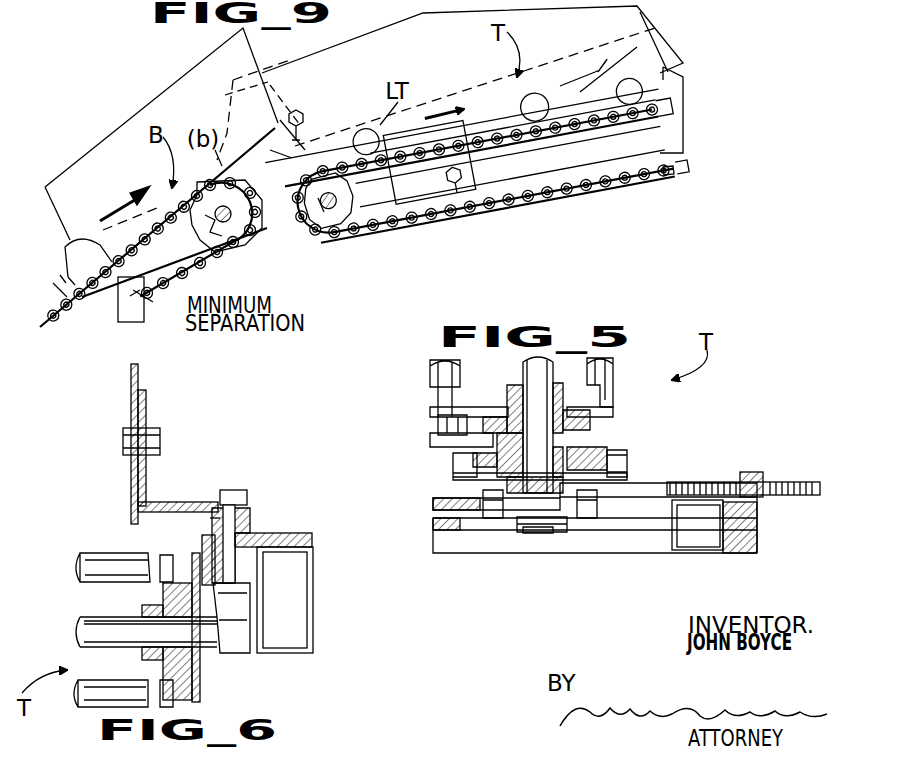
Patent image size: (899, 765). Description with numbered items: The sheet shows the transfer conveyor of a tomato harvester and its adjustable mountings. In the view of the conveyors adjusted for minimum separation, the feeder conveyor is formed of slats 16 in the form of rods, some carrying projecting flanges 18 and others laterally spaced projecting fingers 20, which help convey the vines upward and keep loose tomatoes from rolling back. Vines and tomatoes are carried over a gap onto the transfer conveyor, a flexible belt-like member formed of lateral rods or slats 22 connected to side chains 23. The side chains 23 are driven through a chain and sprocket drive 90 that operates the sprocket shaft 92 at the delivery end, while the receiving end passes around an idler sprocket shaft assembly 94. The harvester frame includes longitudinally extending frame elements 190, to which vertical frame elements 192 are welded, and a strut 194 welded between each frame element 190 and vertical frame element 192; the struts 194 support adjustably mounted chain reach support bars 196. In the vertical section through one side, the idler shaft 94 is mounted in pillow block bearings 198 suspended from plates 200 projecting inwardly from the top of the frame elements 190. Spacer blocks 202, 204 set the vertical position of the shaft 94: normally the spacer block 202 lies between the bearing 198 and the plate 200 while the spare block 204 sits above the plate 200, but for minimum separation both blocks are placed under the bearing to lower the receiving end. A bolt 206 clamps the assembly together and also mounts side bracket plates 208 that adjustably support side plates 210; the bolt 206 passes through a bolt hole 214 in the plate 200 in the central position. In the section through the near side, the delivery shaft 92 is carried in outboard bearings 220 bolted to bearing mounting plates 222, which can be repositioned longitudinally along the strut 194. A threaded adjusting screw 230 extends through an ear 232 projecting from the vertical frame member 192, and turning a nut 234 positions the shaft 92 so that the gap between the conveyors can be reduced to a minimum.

In FIG. 9, the slats 16 is at (173, 225).
In FIG. 9, the projecting flanges 18 is at (157, 193).
In FIG. 9, the projecting fingers 20 is at (77, 240).
In FIG. 9, the lateral rods or slats 22 is at (480, 214).
In FIG. 6, the lateral rods or slats 22 is at (87, 580).
In FIG. 5, the lateral rods or slats 22 is at (430, 370).
In FIG. 9, the side chains 23 is at (675, 172).
In FIG. 6, the side chains 23 is at (200, 695).
In FIG. 5, the side chains 23 is at (607, 420).
In FIG. 5, the chain and sprocket drive 90 is at (627, 457).
In FIG. 5, the sprocket shaft 92 is at (538, 537).
In FIG. 9, the idler sprocket shaft assembly 94 is at (322, 218).
In FIG. 6, the idler sprocket shaft assembly 94 is at (80, 623).
In FIG. 9, the frame elements 190 is at (673, 53).
In FIG. 6, the frame elements 190 is at (313, 587).
In FIG. 5, the vertical frame elements 192 is at (712, 553).
In FIG. 9, the strut 194 is at (675, 103).
In FIG. 5, the strut 194 is at (457, 533).
In FIG. 9, the chain reach support bars 196 is at (668, 135).
In FIG. 9, the pillow block bearings 198 is at (330, 238).
In FIG. 6, the pillow block bearings 198 is at (233, 660).
In FIG. 9, the plates 200 is at (298, 124).
In FIG. 6, the plates 200 is at (273, 533).
In FIG. 9, the spacer block 202 is at (345, 188).
In FIG. 6, the spacer block 202 is at (212, 557).
In FIG. 9, the spacer block 204 is at (305, 106).
In FIG. 6, the spacer block 204 is at (250, 517).
In FIG. 6, the bolt 206 is at (233, 490).
In FIG. 9, the side bracket plates 208 is at (300, 82).
In FIG. 6, the side bracket plates 208 is at (173, 502).
In FIG. 9, the side plates 210 is at (416, 44).
In FIG. 6, the side plates 210 is at (138, 373).
In FIG. 6, the bolt hole 214 is at (210, 522).
In FIG. 5, the outboard bearings 220 is at (560, 522).
In FIG. 5, the bearing mounting plates 222 is at (453, 498).
In FIG. 5, the threaded adjusting screw 230 is at (787, 477).
In FIG. 5, the ear 232 is at (750, 470).
In FIG. 5, the nut 234 is at (763, 498).